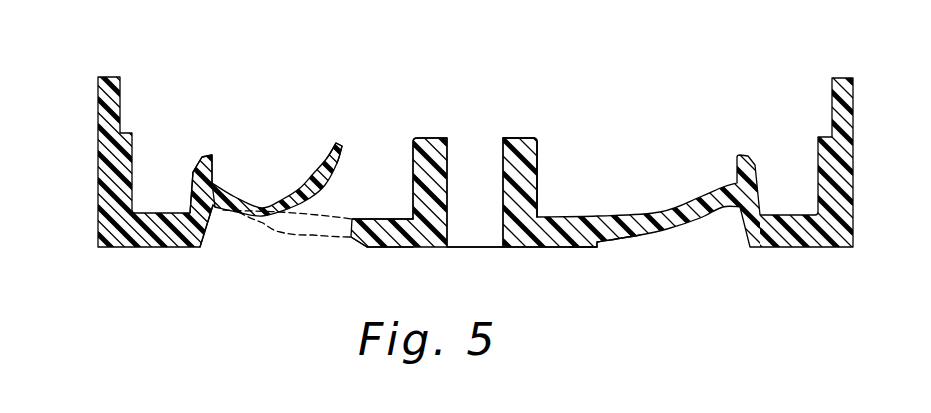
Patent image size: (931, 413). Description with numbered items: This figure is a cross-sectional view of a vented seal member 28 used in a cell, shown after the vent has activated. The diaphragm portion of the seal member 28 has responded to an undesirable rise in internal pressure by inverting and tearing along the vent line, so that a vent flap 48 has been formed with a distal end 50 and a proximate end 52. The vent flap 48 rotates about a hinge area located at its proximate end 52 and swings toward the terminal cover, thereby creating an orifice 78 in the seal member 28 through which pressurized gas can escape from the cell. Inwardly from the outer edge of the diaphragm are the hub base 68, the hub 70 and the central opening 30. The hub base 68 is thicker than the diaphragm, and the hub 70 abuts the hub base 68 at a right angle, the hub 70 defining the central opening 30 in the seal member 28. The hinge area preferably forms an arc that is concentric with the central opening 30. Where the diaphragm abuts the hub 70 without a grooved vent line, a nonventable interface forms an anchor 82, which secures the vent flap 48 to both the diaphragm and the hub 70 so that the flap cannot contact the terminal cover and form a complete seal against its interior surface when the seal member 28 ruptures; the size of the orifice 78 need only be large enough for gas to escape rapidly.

The seal member 28 is at (96, 118).
The central opening 30 is at (480, 150).
The vent flap 48 is at (288, 188).
The distal end 50 is at (333, 139).
The proximate end 52 is at (223, 188).
The hub base 68 is at (525, 237).
The hub 70 is at (537, 180).
The orifice 78 is at (358, 188).
The anchor 82 is at (587, 246).